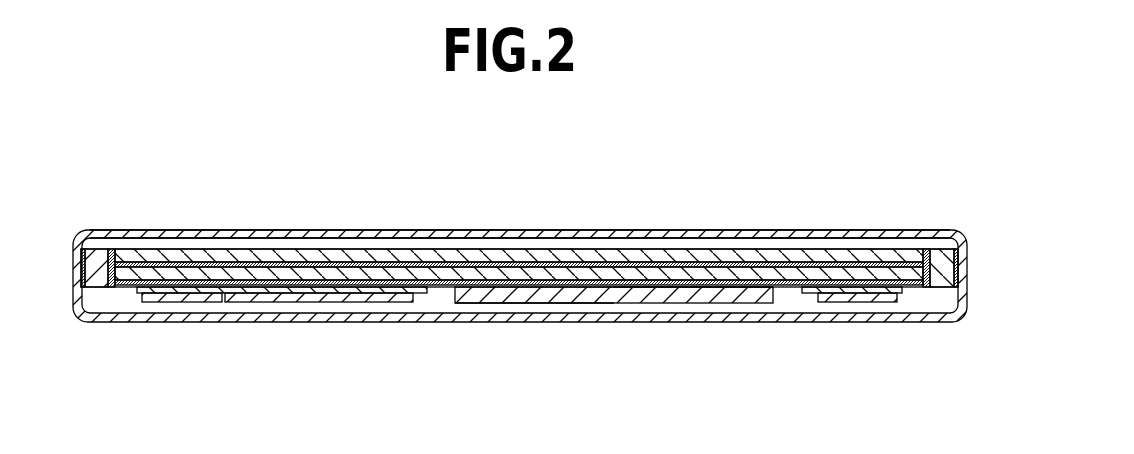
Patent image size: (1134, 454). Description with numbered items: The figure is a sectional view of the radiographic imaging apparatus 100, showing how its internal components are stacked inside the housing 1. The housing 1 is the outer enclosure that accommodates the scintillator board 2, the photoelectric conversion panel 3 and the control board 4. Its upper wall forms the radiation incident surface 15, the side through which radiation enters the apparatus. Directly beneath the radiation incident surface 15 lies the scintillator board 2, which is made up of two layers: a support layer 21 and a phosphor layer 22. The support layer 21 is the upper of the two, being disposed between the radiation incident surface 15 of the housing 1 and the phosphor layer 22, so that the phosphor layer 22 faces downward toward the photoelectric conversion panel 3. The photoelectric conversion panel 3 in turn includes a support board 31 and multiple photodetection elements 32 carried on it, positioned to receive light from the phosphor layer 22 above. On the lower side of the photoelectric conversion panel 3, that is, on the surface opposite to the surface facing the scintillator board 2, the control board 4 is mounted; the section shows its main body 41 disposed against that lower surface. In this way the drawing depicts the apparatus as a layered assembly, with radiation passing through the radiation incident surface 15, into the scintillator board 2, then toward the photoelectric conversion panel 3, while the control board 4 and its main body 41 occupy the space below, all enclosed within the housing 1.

The radiographic imaging apparatus 100 is at (513, 201).
The housing 1 is at (168, 227).
The radiation incident surface 15 is at (295, 230).
The scintillator board 2 is at (918, 181).
The support layer 21 is at (870, 256).
The phosphor layer 22 is at (736, 268).
The photoelectric conversion panel 3 is at (555, 380).
The support board 31 is at (487, 293).
The photodetection elements 32 is at (557, 271).
The control board 4 is at (310, 299).
The main body 41 is at (893, 301).